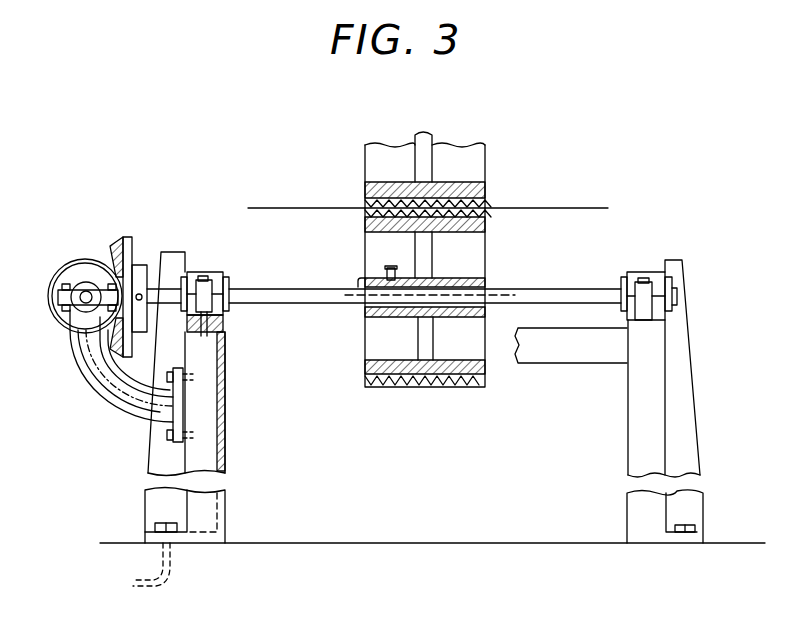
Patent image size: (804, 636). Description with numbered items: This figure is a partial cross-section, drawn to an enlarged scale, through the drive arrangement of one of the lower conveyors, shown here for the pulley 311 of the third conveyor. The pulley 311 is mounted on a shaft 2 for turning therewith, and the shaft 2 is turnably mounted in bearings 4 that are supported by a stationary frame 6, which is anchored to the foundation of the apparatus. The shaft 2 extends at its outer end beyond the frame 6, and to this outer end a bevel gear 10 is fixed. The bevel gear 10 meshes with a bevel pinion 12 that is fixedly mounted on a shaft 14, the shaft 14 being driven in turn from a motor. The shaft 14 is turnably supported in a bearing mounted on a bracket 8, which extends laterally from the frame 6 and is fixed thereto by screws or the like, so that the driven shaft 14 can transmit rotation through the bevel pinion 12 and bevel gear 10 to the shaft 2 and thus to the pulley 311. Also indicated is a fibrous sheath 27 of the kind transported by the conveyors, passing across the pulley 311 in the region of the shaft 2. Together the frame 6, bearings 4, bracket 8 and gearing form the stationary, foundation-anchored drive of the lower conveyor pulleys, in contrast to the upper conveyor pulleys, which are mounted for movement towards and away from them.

The shaft 2 is at (308, 300).
The bearing 4 is at (208, 280).
The stationary frame 6 is at (212, 437).
The bracket 8 is at (112, 386).
The bevel gear 10 is at (115, 243).
The bevel pinion 12 is at (83, 262).
The shaft 14 is at (68, 326).
The fibrous sheath 27 is at (594, 180).
The pulley 311 is at (362, 340).